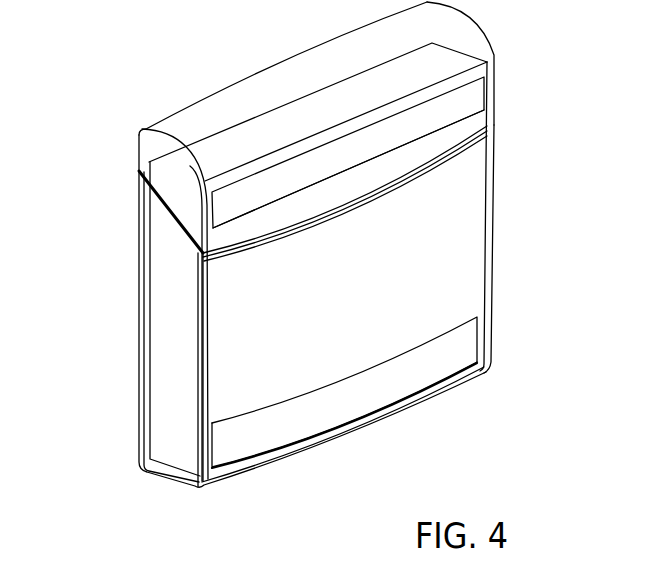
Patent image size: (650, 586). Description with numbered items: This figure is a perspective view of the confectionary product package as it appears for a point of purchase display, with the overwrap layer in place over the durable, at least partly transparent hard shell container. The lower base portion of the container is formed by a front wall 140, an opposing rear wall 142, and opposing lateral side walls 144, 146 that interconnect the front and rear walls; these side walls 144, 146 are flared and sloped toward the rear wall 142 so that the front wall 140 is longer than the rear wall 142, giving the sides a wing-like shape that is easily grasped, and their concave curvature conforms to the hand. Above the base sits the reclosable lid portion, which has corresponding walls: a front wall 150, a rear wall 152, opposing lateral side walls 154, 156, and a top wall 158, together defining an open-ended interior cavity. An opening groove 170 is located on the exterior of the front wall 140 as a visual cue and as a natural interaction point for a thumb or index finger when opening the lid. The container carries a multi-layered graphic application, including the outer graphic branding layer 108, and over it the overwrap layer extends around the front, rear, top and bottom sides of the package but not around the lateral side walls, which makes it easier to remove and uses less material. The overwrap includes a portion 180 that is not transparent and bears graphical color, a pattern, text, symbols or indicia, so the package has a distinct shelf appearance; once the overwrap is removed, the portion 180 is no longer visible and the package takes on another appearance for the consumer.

The outer graphic branding layer 108 is at (338, 400).
The front wall 140 is at (460, 262).
The rear wall 142 is at (138, 332).
The lateral side wall 144 is at (168, 418).
The lateral side wall 146 is at (488, 298).
The front wall 150 is at (490, 100).
The rear wall 152 is at (218, 93).
The lateral side wall 154 is at (148, 137).
The lateral side wall 156 is at (495, 62).
The top wall 158 is at (288, 75).
The opening groove 170 is at (333, 217).
The non-transparent portion 180 is at (363, 160).